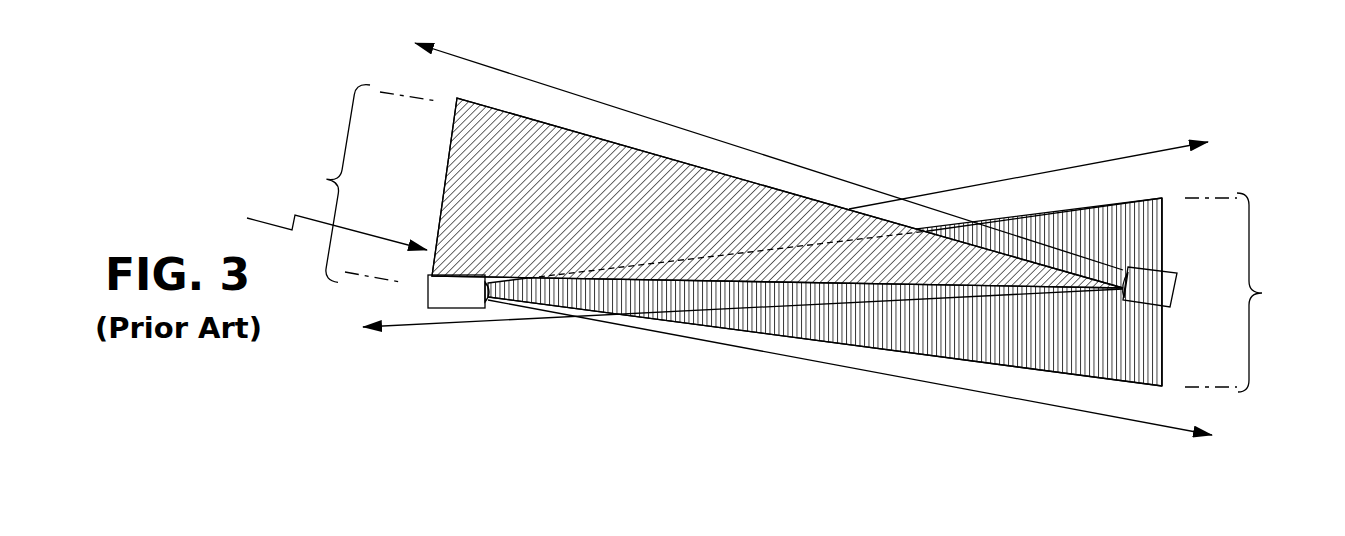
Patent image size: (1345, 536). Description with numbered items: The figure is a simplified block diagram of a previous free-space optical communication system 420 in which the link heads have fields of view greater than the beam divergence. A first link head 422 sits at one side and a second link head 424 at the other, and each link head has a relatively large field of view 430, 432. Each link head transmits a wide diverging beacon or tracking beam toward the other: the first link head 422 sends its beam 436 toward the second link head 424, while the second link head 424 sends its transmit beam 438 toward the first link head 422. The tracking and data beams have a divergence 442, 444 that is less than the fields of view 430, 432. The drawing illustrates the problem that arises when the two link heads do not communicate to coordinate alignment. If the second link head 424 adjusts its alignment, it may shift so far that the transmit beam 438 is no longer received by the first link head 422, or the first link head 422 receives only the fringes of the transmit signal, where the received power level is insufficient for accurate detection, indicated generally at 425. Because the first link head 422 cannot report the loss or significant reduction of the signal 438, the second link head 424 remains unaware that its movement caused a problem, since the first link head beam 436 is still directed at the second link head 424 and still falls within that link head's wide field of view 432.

The free-space optical communication system 420 is at (900, 125).
The first link head 422 is at (447, 295).
The second link head 424 is at (1162, 278).
The insufficient received power level 425 is at (312, 224).
The field of view 430 is at (1153, 150).
The field of view 432 is at (545, 82).
The tracking beam 436 is at (1053, 220).
The transmit beam 438 is at (636, 166).
The beam divergence 442 is at (1247, 292).
The beam divergence 444 is at (358, 184).